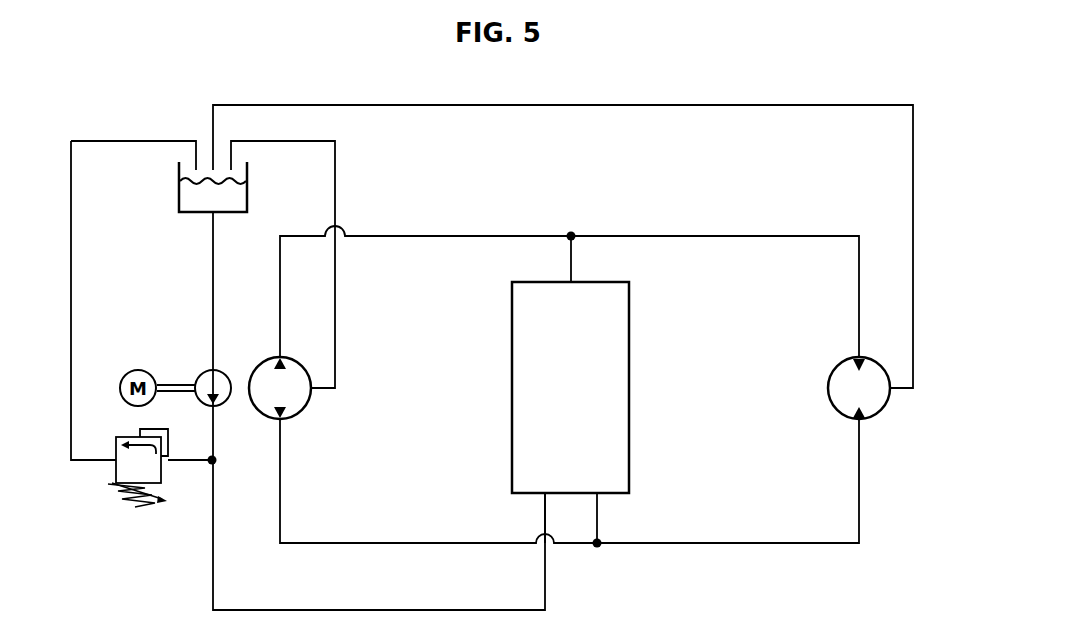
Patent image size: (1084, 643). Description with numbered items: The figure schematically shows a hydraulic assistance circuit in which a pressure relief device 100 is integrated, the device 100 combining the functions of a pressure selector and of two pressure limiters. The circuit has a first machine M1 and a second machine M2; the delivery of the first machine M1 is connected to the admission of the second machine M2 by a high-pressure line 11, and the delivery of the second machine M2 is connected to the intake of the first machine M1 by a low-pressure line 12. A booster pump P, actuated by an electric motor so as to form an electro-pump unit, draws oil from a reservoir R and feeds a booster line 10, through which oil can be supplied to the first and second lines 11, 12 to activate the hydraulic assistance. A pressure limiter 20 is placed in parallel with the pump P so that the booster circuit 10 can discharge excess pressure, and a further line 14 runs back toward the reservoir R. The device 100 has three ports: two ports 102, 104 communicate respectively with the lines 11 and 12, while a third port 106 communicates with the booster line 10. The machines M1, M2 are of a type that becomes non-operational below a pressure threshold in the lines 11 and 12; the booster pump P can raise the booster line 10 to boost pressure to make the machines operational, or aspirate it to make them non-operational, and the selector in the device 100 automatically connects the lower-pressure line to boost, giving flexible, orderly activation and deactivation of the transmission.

The booster line 10 is at (343, 607).
The high-pressure line 11 is at (720, 542).
The low-pressure line 12 is at (722, 236).
The drain line 14 is at (571, 106).
The pressure limiter 20 is at (110, 474).
The pressure relief device 100 is at (636, 390).
The port 102 is at (598, 519).
The port 104 is at (572, 262).
The port 106 is at (544, 519).
The reservoir R is at (176, 197).
The booster pump P is at (194, 368).
The first machine M1 is at (253, 358).
The second machine M2 is at (887, 416).